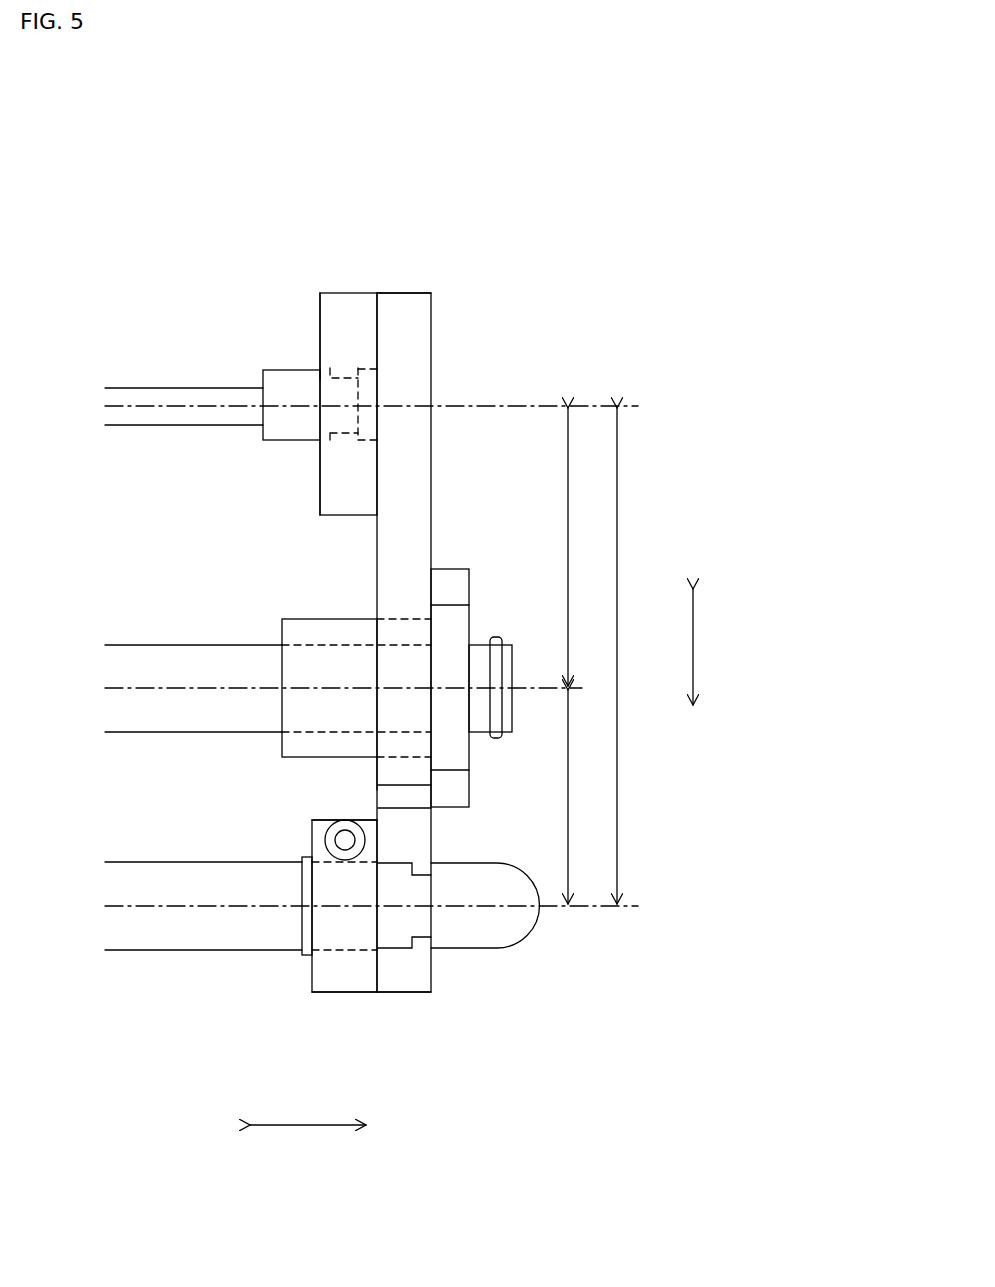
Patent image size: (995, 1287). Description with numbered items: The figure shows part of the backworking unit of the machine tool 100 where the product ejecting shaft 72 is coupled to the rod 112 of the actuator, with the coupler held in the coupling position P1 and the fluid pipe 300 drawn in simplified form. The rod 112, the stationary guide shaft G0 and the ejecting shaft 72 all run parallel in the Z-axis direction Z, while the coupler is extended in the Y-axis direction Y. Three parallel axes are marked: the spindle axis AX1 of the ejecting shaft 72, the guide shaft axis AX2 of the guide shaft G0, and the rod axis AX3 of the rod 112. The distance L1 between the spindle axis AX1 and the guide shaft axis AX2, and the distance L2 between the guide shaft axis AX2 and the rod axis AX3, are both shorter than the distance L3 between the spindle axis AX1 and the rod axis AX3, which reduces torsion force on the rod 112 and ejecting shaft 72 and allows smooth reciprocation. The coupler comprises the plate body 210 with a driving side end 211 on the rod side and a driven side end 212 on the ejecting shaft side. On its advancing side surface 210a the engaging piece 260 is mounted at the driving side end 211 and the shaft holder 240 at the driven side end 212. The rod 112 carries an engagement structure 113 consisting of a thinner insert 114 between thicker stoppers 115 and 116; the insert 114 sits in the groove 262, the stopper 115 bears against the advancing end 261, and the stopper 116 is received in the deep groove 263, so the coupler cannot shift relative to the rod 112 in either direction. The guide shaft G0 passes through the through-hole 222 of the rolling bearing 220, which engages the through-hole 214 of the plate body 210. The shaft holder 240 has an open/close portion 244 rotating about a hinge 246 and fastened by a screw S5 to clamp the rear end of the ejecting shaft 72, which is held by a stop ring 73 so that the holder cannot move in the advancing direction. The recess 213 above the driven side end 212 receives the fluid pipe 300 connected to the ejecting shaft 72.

The robot 100 is at (469, 289).
The rod 112 is at (152, 388).
The engagement structure 113 is at (319, 443).
The insert 114 is at (333, 437).
The stopper 115 is at (282, 442).
The stopper 116 is at (363, 441).
The plate body 210 is at (417, 291).
The advancing side surface 210a is at (377, 776).
The driving side end 211 is at (398, 292).
The driven side end 212 is at (405, 994).
The recess 213 is at (417, 972).
The through-hole 214 is at (372, 618).
The rolling bearing 220 is at (318, 619).
The through-hole 222 is at (281, 643).
The shaft holder 240 is at (320, 999).
The open/close portion 244 is at (320, 820).
The hinge 246 is at (340, 994).
The engaging piece 260 is at (350, 291).
The advancing end 261 is at (320, 296).
The groove 262 is at (321, 371).
The deep groove 263 is at (358, 368).
The fluid pipe 300 is at (521, 951).
The product ejecting shaft 72 is at (152, 862).
The stop ring 73 is at (303, 958).
The spindle axis AX1 is at (158, 912).
The guide shaft axis AX2 is at (158, 694).
The rod axis AX3 is at (160, 412).
The guide shaft G0 is at (152, 645).
The screw S5 is at (335, 840).
The coupling position P1 is at (375, 1017).
The distance L1 is at (582, 797).
The distance L2 is at (582, 547).
The distance L3 is at (635, 656).
The Y-axis direction Y is at (704, 647).
The Z-axis direction Z is at (308, 1139).